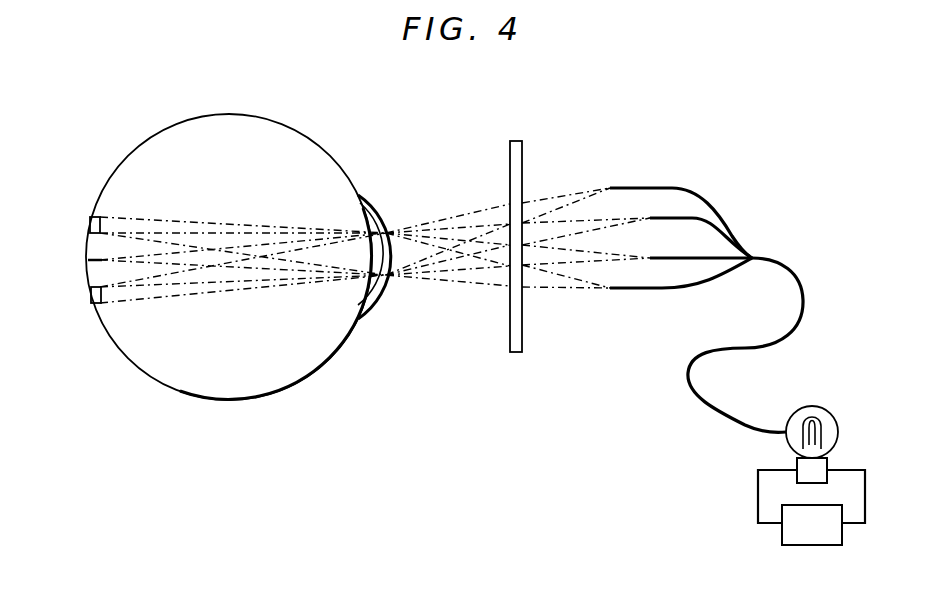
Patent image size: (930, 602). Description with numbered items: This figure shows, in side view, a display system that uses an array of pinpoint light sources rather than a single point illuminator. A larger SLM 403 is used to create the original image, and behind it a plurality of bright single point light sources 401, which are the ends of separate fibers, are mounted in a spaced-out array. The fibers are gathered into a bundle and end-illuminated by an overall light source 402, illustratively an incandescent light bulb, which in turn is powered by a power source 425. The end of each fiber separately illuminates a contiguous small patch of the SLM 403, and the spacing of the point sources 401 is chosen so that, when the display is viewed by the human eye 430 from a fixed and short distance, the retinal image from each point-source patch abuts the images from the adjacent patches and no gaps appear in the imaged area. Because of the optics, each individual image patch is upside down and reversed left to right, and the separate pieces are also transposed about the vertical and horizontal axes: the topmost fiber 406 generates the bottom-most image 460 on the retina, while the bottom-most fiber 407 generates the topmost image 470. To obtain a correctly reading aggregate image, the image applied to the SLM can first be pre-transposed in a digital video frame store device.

The human eye 430 is at (172, 137).
The topmost image 470 is at (89, 223).
The bottom-most image 460 is at (91, 296).
The SLM 403 is at (513, 141).
The topmost fiber 406 is at (625, 168).
The bottom-most fiber 407 is at (653, 310).
The single point light sources 401 is at (773, 260).
The overall light source 402 is at (834, 413).
The power source 425 is at (812, 525).